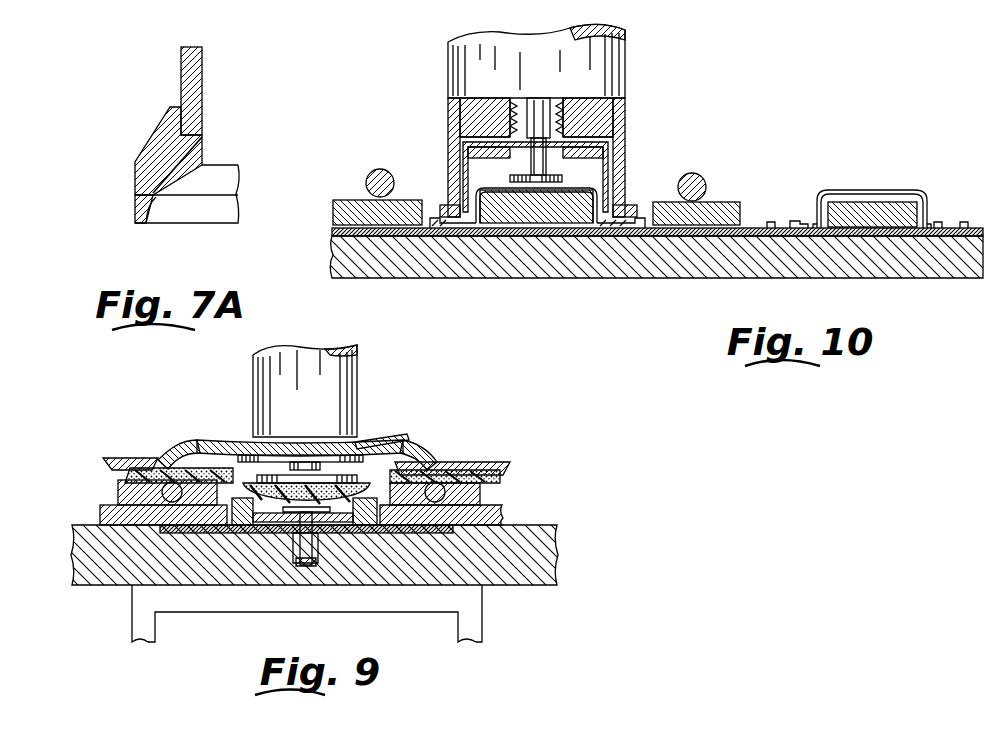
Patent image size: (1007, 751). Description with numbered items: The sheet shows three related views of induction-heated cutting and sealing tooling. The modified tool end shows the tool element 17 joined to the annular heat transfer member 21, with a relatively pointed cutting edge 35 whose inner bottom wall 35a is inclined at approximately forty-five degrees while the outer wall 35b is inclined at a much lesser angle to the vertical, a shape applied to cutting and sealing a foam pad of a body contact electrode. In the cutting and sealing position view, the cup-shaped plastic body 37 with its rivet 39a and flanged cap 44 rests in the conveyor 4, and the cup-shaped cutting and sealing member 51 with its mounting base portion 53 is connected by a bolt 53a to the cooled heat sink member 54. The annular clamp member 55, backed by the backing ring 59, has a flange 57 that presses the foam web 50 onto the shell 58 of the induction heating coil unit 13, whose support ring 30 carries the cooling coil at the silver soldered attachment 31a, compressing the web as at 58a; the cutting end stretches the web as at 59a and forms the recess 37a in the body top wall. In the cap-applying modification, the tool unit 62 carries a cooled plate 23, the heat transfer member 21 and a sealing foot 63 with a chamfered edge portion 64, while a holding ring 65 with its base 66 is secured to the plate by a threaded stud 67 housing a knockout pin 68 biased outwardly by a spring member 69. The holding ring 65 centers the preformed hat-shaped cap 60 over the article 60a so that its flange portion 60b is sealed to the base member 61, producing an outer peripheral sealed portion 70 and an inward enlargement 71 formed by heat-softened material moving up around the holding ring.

In FIG. 10, the conveyor 4 is at (690, 279).
In FIG. 9, the conveyor 4 is at (93, 573).
In FIG. 10, the induction heating coil unit 13 is at (730, 187).
In FIG. 9, the induction heating coil unit 13 is at (89, 519).
In FIG. 7A, the annular cutting element 17 is at (153, 121).
In FIG. 10, the annular cutting element 17 is at (637, 152).
In FIG. 7A, the annular heat transfer member 21 is at (203, 83).
In FIG. 10, the annular heat transfer member 21 is at (624, 130).
In FIG. 10, the cooled plate 23 is at (623, 107).
In FIG. 9, the support ring 30 is at (128, 517).
In FIG. 9, the silver soldered attachment 31a is at (168, 500).
In FIG. 7A, the cutting edge 35 is at (140, 223).
In FIG. 7A, the inner bottom wall 35a is at (147, 210).
In FIG. 7A, the outer wall 35b is at (135, 185).
In FIG. 9, the cup-shaped plastic body 37 is at (367, 520).
In FIG. 9, the recess 37a is at (217, 493).
In FIG. 9, the rivet 39a is at (295, 557).
In FIG. 9, the flanged cap 44 is at (303, 567).
In FIG. 9, the foam web 50 is at (493, 465).
In FIG. 9, the cup-shaped cutting and sealing member 51 is at (242, 471).
In FIG. 9, the mounting base portion 53 is at (342, 468).
In FIG. 9, the bolt 53a is at (312, 468).
In FIG. 9, the cooled heat sink member 54 is at (359, 367).
In FIG. 9, the annular clamp member 55 is at (199, 427).
In FIG. 9, the flange 57 is at (167, 460).
In FIG. 10, the shell 58 is at (471, 246).
In FIG. 9, the shell 58 is at (478, 492).
In FIG. 9, the compressed web 58a is at (437, 480).
In FIG. 9, the backing ring 59 is at (383, 433).
In FIG. 9, the stretched web portion 59a is at (237, 517).
In FIG. 10, the preformed hat-shaped cap 60 is at (557, 236).
In FIG. 10, the article 60a is at (547, 222).
In FIG. 10, the flange portion 60b is at (435, 230).
In FIG. 10, the base member 61 is at (618, 237).
In FIG. 10, the tool unit 62 is at (636, 65).
In FIG. 10, the sealing foot 63 is at (440, 205).
In FIG. 10, the chamfered edge portion 64 is at (614, 200).
In FIG. 10, the holding ring 65 is at (468, 165).
In FIG. 10, the base 66 is at (577, 168).
In FIG. 10, the threaded stud 67 is at (522, 97).
In FIG. 10, the knockout pin 68 is at (546, 98).
In FIG. 10, the spring member 69 is at (527, 98).
In FIG. 10, the outer peripheral sealed portion 70 is at (772, 222).
In FIG. 10, the enlargement 71 is at (817, 220).